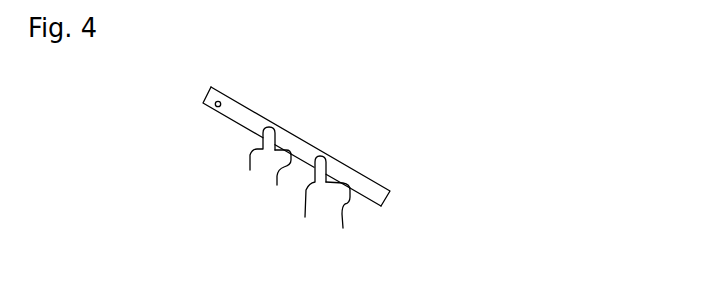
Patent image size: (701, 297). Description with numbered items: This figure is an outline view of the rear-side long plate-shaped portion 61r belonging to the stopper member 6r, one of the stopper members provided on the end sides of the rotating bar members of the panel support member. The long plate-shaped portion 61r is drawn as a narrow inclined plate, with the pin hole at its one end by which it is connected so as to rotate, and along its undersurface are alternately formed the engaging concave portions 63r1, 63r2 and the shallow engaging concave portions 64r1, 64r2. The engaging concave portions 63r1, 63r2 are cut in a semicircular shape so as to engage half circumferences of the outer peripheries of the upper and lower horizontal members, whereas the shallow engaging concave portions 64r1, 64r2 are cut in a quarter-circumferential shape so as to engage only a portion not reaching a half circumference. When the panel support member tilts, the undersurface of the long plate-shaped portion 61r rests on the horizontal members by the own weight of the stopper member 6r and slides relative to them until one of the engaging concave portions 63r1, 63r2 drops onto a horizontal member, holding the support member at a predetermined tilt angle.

The long plate-shaped portion 61r is at (203, 103).
The stopper member 6r is at (221, 146).
The engaging concave portion 63r1 is at (240, 159).
The shallow engaging concave portion 64r1 is at (269, 181).
The engaging concave portion 63r2 is at (301, 199).
The shallow engaging concave portion 64r2 is at (349, 221).